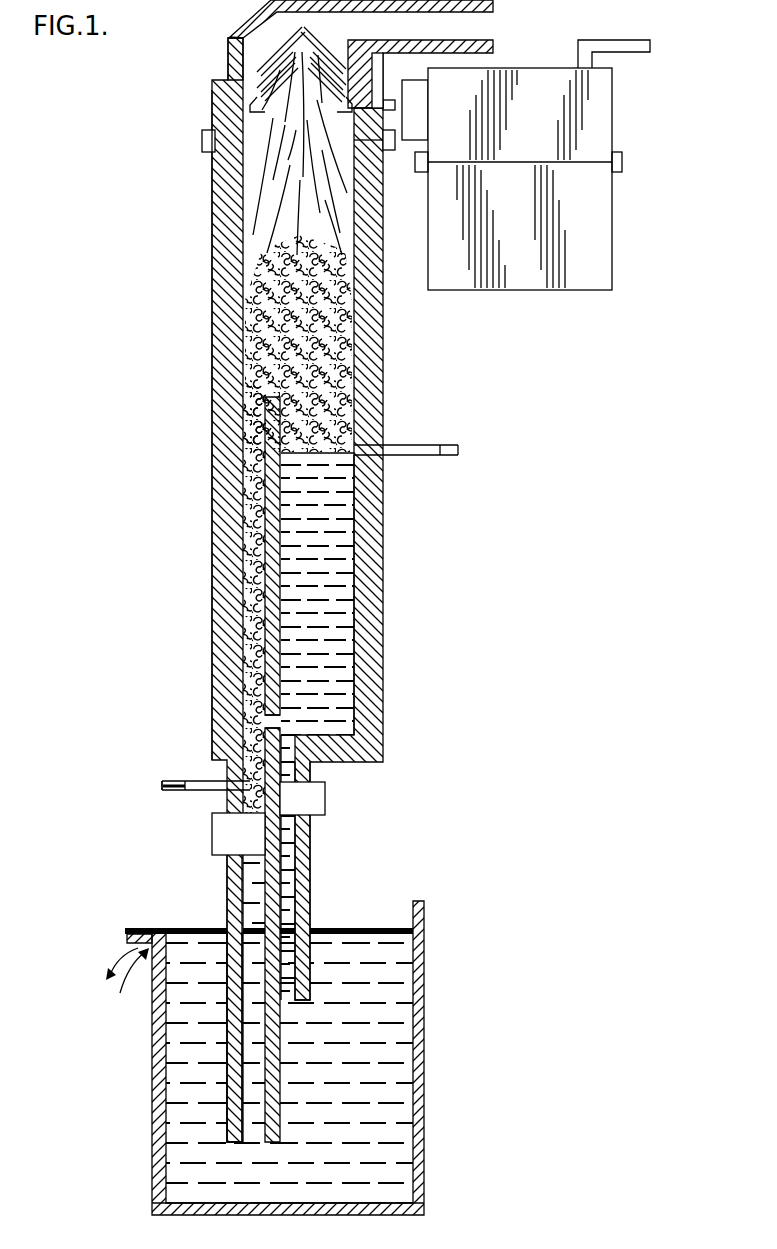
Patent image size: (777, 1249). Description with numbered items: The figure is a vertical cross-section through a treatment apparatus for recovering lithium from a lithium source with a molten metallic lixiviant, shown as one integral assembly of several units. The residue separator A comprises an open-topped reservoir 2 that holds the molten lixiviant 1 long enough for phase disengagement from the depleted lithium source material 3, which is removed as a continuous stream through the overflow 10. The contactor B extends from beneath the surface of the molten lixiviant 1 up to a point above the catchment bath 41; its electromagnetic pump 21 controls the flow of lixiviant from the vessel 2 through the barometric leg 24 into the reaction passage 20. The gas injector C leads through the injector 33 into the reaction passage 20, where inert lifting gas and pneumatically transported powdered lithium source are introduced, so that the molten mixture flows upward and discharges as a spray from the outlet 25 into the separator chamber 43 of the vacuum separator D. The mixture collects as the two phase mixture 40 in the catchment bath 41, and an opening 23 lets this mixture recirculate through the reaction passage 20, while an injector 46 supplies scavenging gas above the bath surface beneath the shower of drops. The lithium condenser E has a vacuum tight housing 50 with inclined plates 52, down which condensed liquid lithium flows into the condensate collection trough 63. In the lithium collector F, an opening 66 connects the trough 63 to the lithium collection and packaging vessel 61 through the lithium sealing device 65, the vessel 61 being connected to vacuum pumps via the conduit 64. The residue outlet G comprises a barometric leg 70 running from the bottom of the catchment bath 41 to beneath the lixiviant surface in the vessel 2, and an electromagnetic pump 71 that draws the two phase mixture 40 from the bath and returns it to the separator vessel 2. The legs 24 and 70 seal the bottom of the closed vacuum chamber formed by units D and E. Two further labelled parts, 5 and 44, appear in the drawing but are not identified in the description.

The molten lixiviant 1 is at (393, 1017).
The reservoir 2 is at (425, 1070).
The depleted lithium source material 3 is at (364, 931).
The top plate 5 is at (491, 36).
The overflow 10 is at (129, 977).
The reaction passage 20 is at (242, 610).
The electromagnetic pump 21 is at (212, 838).
The opening 23 is at (275, 722).
The barometric leg 24 is at (227, 911).
The outlet 25 is at (243, 388).
The injector 33 is at (162, 788).
The two phase mixture 40 is at (342, 644).
The catchment bath 41 is at (350, 555).
The separator chamber 43 is at (355, 340).
The outer wall 44 is at (212, 464).
The injector 46 is at (455, 447).
The vacuum tight housing 50 is at (226, 80).
The plates 52 is at (300, 153).
The lithium collection and packaging vessel 61 is at (612, 118).
The condensate collection trough 63 is at (336, 195).
The conduit 64 is at (648, 52).
The lithium sealing device 65 is at (416, 114).
The opening 66 is at (378, 78).
The barometric leg 70 is at (310, 874).
The electromagnetic pump 71 is at (326, 797).
The residue separator A is at (425, 1170).
The contactor B is at (227, 889).
The gas injector C is at (167, 788).
The vacuum separator D is at (212, 222).
The lithium condenser E is at (232, 40).
The lithium collector F is at (612, 230).
The residue outlet G is at (310, 838).